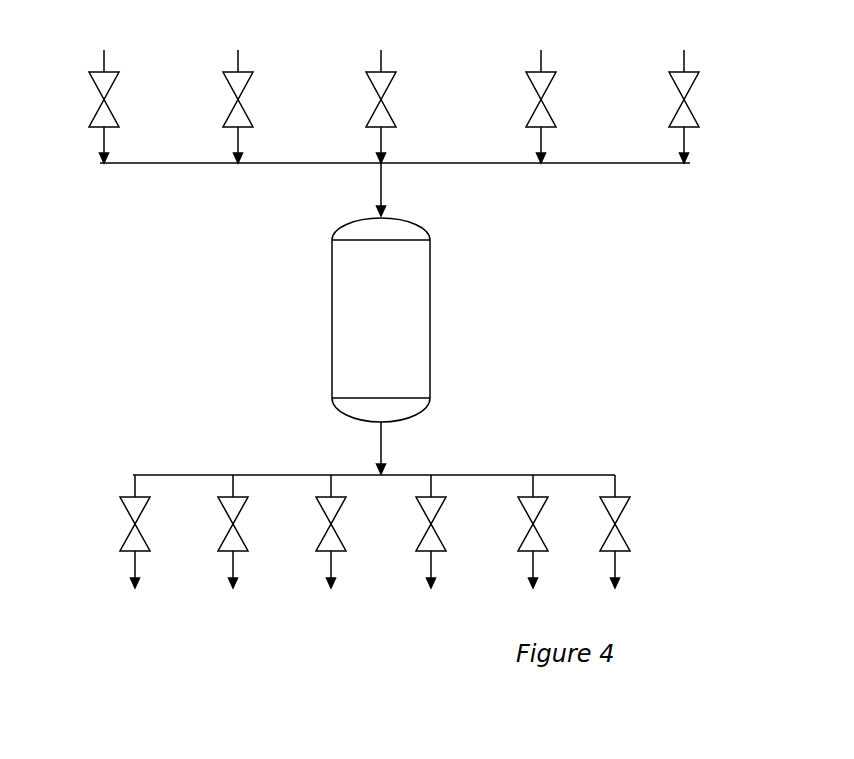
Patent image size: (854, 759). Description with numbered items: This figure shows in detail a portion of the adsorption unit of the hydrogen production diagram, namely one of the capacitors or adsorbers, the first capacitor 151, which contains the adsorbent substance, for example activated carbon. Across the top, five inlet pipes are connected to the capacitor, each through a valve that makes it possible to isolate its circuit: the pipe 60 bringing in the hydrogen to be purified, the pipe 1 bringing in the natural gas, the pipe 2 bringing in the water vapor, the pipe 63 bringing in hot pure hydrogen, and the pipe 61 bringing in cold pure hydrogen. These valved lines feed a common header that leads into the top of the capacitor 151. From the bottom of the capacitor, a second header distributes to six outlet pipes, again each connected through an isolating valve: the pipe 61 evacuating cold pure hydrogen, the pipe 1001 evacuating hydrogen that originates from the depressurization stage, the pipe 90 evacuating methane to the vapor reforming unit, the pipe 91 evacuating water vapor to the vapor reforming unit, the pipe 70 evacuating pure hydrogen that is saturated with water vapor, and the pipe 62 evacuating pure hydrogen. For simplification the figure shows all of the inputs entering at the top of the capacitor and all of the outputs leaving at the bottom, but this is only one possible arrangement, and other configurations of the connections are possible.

The pipe bringing in hydrogen to be purified 60 is at (104, 92).
The pipe bringing in natural gas 1 is at (235, 92).
The pipe bringing in water vapor 2 is at (381, 92).
The pipe bringing in hot pure hydrogen 63 is at (537, 92).
The pipe for cold pure hydrogen 61 is at (398, 310).
The first capacitor 151 is at (406, 353).
The pipe evacuating hydrogen from the depressurization stage 1001 is at (213, 537).
The pipe evacuating methane to the vapor reforming unit 90 is at (326, 537).
The pipe evacuating water vapor to the vapor reforming unit 91 is at (422, 537).
The pipe evacuating pure hydrogen saturated with water vapor 70 is at (525, 537).
The pipe evacuating pure hydrogen 62 is at (606, 537).